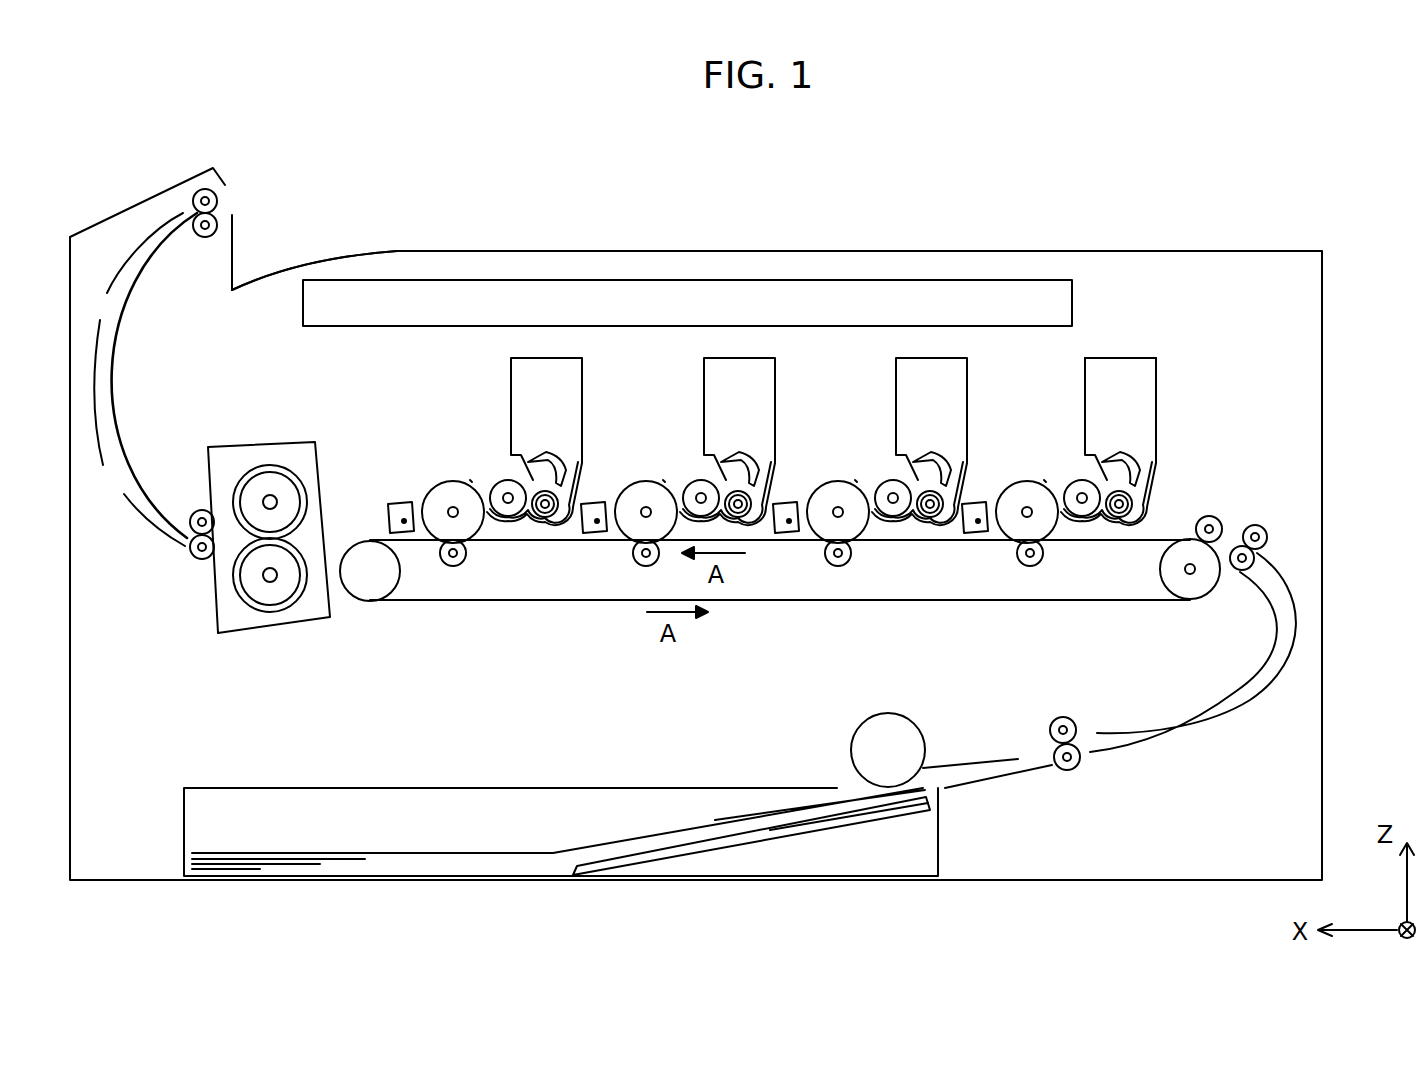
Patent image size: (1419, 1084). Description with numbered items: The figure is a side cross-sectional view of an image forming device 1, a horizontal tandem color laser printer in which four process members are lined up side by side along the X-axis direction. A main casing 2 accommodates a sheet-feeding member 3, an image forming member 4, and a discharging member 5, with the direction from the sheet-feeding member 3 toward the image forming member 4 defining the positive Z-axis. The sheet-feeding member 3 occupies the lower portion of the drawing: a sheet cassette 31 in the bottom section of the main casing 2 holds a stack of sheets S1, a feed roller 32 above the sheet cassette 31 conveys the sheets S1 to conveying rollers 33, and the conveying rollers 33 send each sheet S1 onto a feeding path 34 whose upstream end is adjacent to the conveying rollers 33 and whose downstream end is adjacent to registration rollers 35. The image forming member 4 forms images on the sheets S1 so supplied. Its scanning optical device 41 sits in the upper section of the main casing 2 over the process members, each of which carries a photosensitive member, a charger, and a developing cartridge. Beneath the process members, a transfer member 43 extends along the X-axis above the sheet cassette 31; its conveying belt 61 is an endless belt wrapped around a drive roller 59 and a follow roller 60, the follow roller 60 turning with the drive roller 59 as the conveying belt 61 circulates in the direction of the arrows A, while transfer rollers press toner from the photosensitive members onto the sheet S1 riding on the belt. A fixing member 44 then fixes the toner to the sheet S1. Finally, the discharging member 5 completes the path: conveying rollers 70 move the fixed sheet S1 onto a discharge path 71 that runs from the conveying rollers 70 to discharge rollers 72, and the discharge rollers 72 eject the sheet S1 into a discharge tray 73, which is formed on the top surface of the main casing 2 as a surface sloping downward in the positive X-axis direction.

The image forming device 1 is at (545, 166).
The main casing 2 is at (1310, 397).
The sheet-feeding member 3 is at (1292, 756).
The image forming member 4 is at (1172, 370).
The discharging member 5 is at (127, 242).
The sheet cassette 31 is at (250, 797).
The feed roller 32 is at (855, 751).
The conveying rollers 33 is at (1082, 761).
The feeding path 34 is at (1197, 735).
The registration rollers 35 is at (1253, 556).
The scanning optical device 41 is at (817, 280).
The transfer member 43 is at (1146, 612).
The fixing member 44 is at (267, 438).
The drive roller 59 is at (378, 580).
The follow roller 60 is at (1193, 580).
The conveying belt 61 is at (928, 601).
The conveying rollers 70 is at (193, 548).
The discharge path 71 is at (110, 373).
The discharge rollers 72 is at (220, 224).
The discharge tray 73 is at (353, 252).
The sheet S1 is at (460, 856).